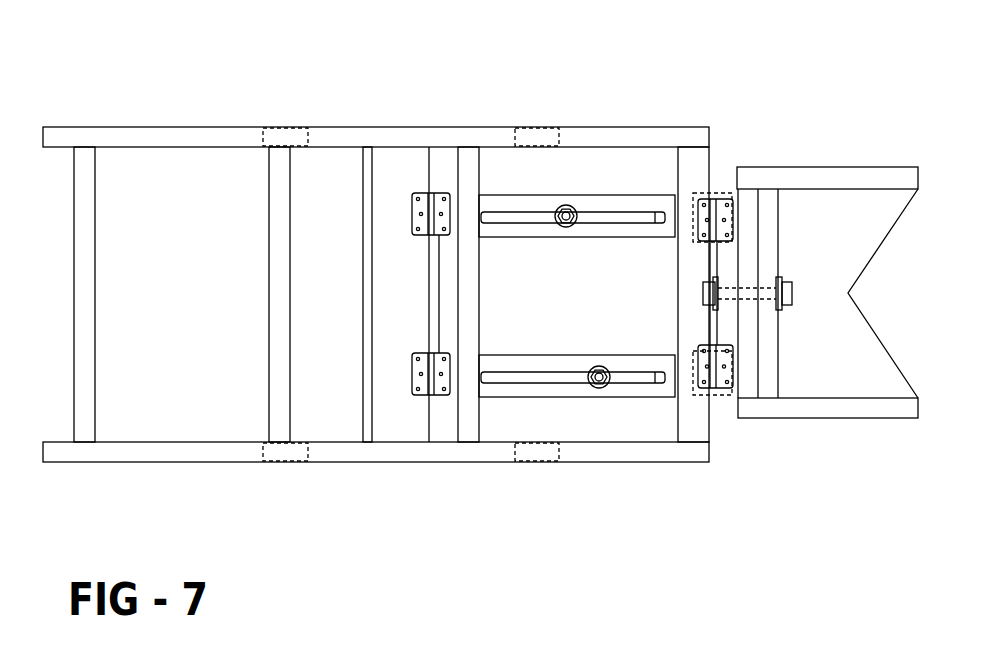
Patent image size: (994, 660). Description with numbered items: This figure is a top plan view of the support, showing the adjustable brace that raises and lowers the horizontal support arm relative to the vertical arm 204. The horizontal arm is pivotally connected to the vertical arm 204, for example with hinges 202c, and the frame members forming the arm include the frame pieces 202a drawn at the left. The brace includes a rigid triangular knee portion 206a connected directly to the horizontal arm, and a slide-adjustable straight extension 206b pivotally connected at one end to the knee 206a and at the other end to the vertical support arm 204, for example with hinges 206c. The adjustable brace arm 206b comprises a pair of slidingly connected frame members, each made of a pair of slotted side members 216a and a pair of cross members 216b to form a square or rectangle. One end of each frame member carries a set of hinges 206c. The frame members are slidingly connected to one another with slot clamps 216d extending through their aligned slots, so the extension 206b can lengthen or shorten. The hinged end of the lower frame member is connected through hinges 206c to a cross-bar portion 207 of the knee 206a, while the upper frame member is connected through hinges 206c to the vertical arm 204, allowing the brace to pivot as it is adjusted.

The frame member 202a is at (278, 273).
The hinges 202c is at (718, 192).
The vertical arm 204 is at (747, 200).
The rigid triangular knee portion 206a is at (262, 145).
The slide-adjustable straight extension 206b is at (576, 422).
The hinges 206c is at (713, 400).
The cross-bar portion 207 is at (393, 160).
The slotted side members 216a is at (623, 233).
The cross members 216b is at (448, 286).
The slot clamps 216d is at (568, 205).